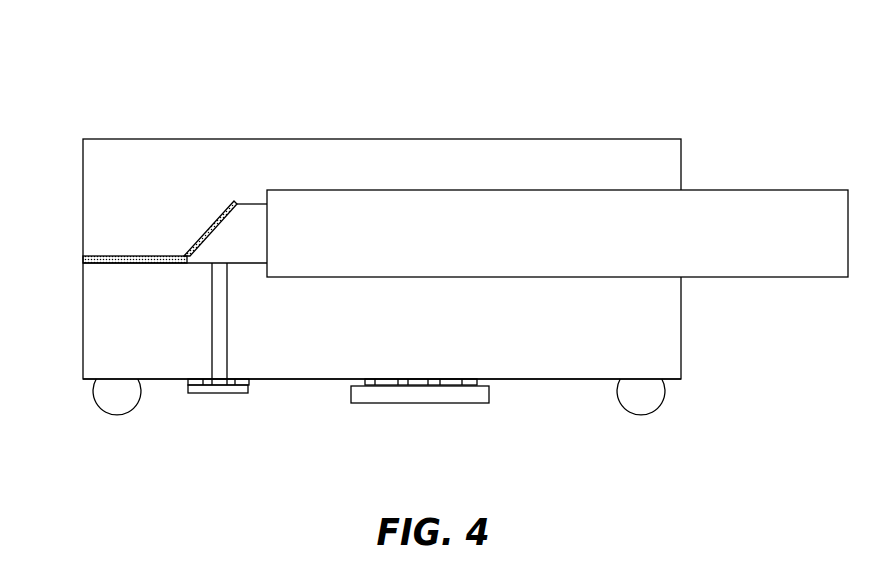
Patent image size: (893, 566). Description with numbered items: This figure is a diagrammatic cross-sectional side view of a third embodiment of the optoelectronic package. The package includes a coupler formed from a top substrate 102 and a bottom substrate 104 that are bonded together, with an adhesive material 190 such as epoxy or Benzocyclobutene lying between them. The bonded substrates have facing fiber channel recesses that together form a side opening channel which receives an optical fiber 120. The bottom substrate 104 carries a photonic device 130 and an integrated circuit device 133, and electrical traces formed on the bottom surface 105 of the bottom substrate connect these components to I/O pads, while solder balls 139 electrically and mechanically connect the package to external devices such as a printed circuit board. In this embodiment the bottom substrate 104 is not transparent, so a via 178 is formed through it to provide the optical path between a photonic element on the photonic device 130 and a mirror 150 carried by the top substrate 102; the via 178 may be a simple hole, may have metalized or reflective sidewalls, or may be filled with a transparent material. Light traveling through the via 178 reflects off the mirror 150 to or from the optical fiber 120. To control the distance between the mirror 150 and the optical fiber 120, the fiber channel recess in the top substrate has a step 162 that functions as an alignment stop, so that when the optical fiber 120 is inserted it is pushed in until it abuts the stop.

The top substrate 102 is at (603, 162).
The bottom substrate 104 is at (657, 320).
The bottom surface 105 is at (290, 380).
The optical fiber 120 is at (793, 190).
The photonic device 130 is at (215, 393).
The integrated circuit device 133 is at (428, 406).
The solder balls 139 is at (645, 415).
The mirror 150 is at (207, 223).
The step 162 is at (265, 192).
The via 178 is at (227, 328).
The adhesive material 190 is at (83, 260).